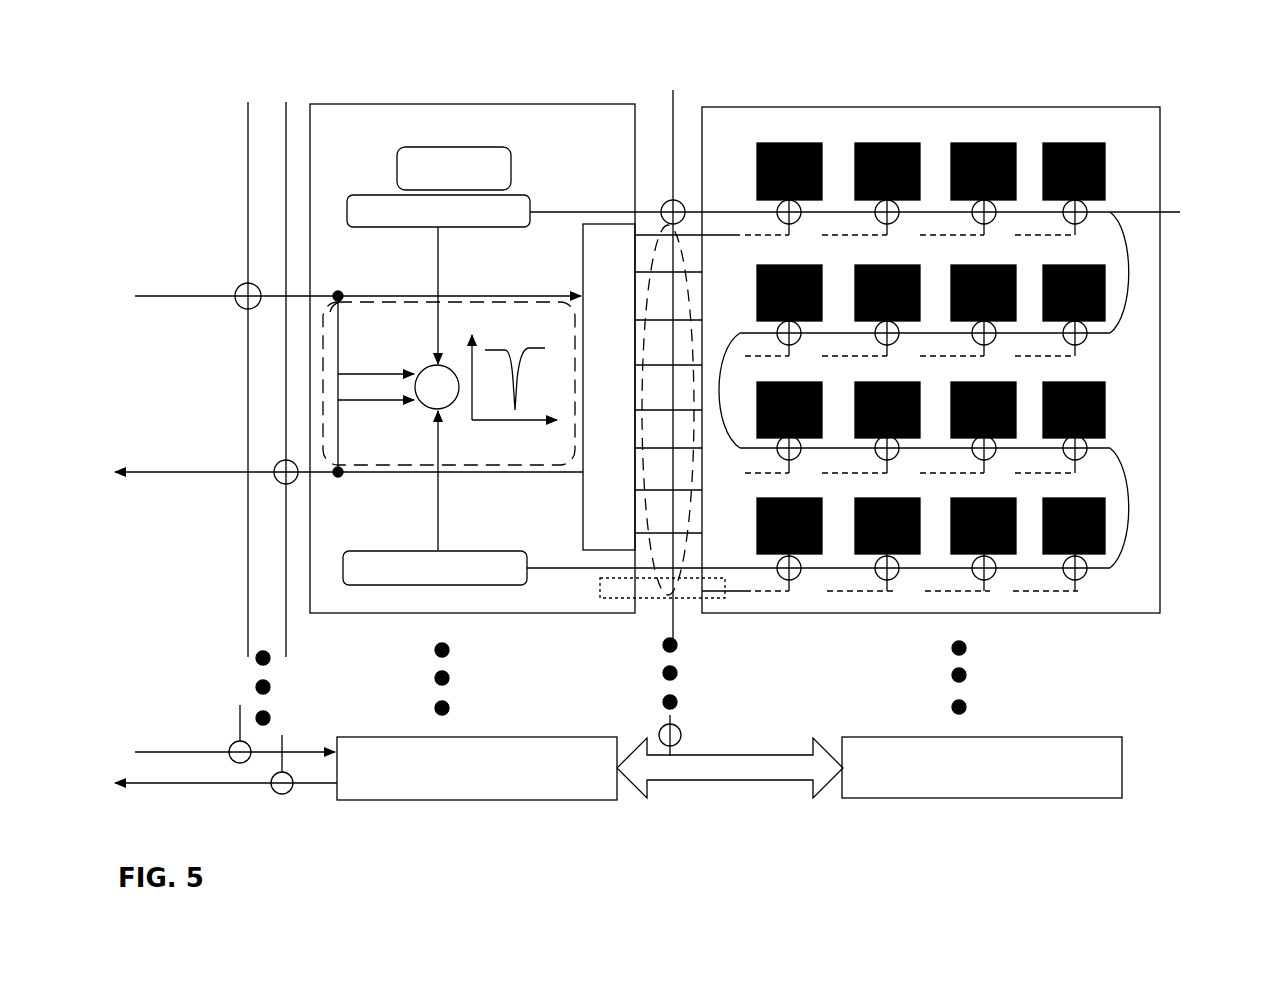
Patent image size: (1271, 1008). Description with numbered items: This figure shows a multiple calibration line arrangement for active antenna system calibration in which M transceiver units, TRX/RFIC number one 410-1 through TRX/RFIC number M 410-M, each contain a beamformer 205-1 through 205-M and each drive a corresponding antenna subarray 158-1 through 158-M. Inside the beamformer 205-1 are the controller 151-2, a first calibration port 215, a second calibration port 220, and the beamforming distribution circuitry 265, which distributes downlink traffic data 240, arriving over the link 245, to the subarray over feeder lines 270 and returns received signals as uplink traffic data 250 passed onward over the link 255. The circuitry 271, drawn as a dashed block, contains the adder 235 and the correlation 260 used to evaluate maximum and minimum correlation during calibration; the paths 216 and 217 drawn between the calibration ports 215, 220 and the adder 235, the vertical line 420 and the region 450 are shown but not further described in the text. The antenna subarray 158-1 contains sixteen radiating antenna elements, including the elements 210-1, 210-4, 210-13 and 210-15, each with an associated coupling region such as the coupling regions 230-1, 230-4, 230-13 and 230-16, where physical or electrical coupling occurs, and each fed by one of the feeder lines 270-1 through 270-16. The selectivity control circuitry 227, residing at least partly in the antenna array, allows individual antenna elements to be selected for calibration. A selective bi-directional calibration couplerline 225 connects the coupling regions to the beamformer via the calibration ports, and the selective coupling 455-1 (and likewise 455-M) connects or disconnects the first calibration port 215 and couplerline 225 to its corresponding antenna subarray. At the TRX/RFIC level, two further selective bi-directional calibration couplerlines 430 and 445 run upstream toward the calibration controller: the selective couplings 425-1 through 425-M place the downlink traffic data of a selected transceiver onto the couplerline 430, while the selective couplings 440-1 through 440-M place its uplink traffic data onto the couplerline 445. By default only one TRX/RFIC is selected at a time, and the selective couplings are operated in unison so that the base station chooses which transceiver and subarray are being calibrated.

The TRX/RFIC number one 410-1 is at (391, 84).
The beamformer 205-1 is at (432, 129).
The controller 151-2 is at (401, 183).
The calibration port 215 is at (452, 229).
The calibration signal path from port 1 216 is at (438, 252).
The calibration signal path to port 2 217 is at (436, 481).
The calibration port 220 is at (473, 553).
The beamforming distribution circuitry 265 is at (592, 278).
The RF bus / connection lines 420 is at (682, 134).
The coupling region 450 is at (680, 625).
The selective coupling 455-1 is at (664, 203).
The selective bi-directional calibration couplerline 225 is at (582, 204).
The selectivity control circuitry 227 is at (713, 577).
The feeder lines 270 is at (660, 583).
The downlink traffic data 240 is at (116, 262).
The link 245 is at (158, 297).
The selective coupling 425-1 is at (232, 306).
The uplink traffic data 250 is at (130, 442).
The link 255 is at (143, 477).
The selective coupling 440-1 is at (275, 482).
The circuitry 271 is at (427, 300).
The adder 235 is at (420, 369).
The correlation 260 is at (510, 352).
The antenna subarray 158-1 is at (1130, 108).
The antenna element 210-1 is at (800, 143).
The antenna element 210-4 is at (1062, 143).
The antenna element 210-13 is at (765, 554).
The antenna element 210-15 is at (1022, 558).
The coupling region 230-1 is at (776, 208).
The coupling region 230-4 is at (1147, 210).
The coupling region 230-13 is at (803, 582).
The coupling region 230-16 is at (1086, 578).
The feeder line 270-1 is at (712, 237).
The feeder line 270-16 is at (1028, 592).
The selective bi-directional calibration couplerline 430 is at (244, 186).
The selective bi-directional calibration couplerline 445 is at (280, 562).
The TRX/RFIC number M 410-M is at (545, 737).
The beamformer 205-M is at (466, 783).
The selective coupling 455-M is at (662, 728).
The antenna subarray 158-M is at (900, 738).
The selective coupling 425-M is at (230, 744).
The selective coupling 440-M is at (275, 796).